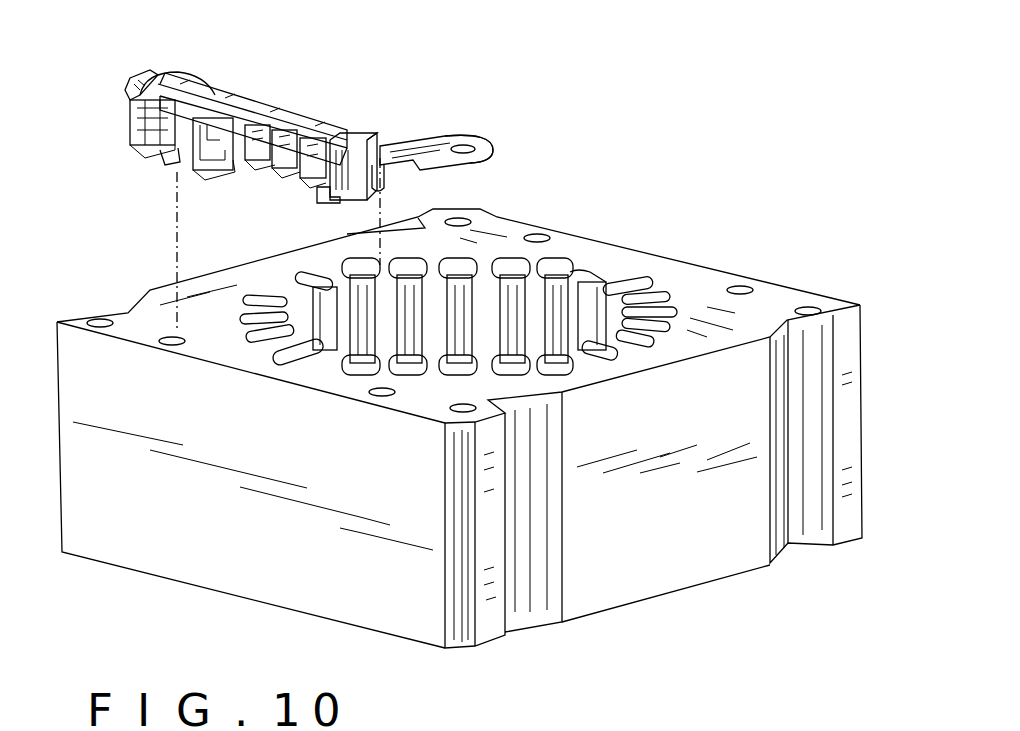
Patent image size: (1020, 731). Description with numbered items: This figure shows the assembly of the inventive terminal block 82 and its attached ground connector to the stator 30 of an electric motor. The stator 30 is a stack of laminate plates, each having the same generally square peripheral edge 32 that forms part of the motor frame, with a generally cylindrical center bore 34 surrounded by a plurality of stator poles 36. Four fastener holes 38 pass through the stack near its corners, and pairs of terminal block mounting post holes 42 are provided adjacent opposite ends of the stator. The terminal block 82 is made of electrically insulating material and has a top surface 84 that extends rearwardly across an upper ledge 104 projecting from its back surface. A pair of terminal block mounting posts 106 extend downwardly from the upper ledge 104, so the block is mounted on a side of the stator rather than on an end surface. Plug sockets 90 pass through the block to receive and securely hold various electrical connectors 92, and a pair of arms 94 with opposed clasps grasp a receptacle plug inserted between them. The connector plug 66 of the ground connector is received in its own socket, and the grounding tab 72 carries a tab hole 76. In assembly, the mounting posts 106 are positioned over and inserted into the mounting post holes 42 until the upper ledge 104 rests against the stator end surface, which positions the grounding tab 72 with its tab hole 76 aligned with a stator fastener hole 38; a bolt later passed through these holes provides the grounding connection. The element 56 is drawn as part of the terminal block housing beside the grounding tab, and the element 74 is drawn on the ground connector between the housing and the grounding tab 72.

The stator 30 is at (467, 400).
The peripheral edge 32 is at (290, 248).
The center bore 34 is at (483, 265).
The stator poles 36 is at (345, 238).
The fastener holes 38 is at (100, 316).
The terminal block mounting post holes 42 is at (375, 388).
The terminal housing 56 is at (365, 132).
The connector plug 66 is at (298, 135).
The grounding tab 72 is at (478, 138).
The tab arm 74 is at (412, 145).
The tab hole 76 is at (463, 143).
The terminal block 82 is at (230, 78).
The top surface 84 is at (180, 78).
The plug sockets 90 is at (140, 143).
The electrical connectors 92 is at (137, 120).
The arms 94 is at (210, 117).
The upper ledge 104 is at (262, 107).
The terminal block mounting posts 106 is at (167, 157).